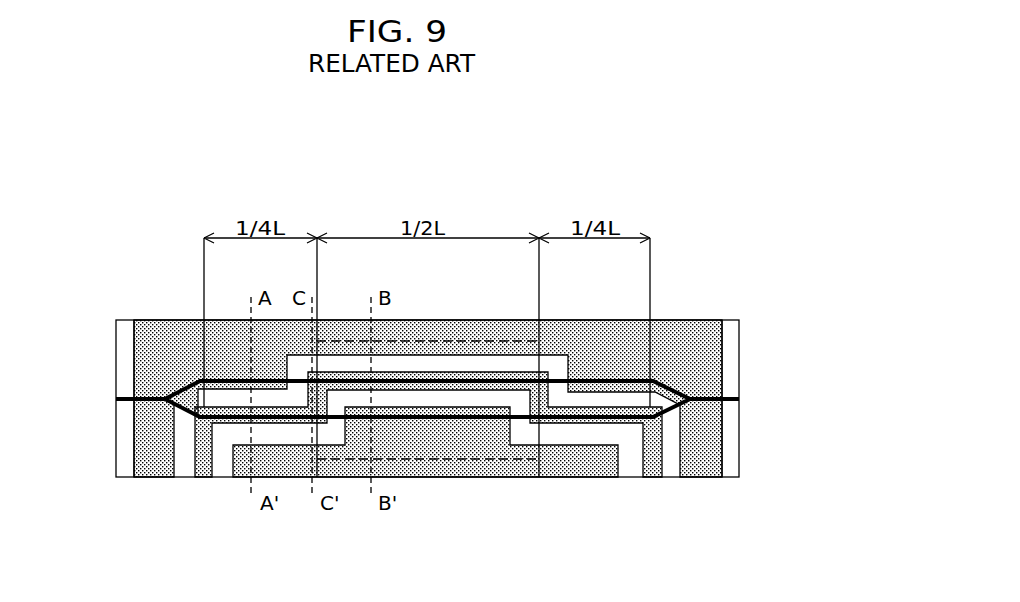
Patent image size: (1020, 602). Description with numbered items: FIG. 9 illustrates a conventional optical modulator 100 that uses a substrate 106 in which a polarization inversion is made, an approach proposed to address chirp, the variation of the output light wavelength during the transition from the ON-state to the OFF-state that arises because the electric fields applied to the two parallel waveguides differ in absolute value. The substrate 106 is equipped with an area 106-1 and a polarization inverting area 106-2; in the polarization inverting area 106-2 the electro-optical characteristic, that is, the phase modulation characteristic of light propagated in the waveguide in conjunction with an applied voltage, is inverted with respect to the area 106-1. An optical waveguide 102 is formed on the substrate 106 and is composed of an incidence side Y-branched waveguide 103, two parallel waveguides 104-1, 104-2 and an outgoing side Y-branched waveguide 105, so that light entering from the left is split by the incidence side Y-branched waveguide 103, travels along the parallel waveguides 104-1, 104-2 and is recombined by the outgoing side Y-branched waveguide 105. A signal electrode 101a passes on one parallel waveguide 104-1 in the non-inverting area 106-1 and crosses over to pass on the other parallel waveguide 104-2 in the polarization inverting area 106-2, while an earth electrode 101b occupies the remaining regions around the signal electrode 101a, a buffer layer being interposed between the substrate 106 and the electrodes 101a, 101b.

The optical modulator 100 is at (681, 294).
The signal electrode 101a is at (205, 464).
The earth electrode 101b is at (418, 462).
The optical waveguide 102 is at (127, 402).
The incidence side Y-branched waveguide 103 is at (190, 368).
The parallel waveguide 104-1 is at (453, 373).
The parallel waveguide 104-2 is at (292, 420).
The outgoing side Y-branched waveguide 105 is at (670, 381).
The substrate 106 is at (740, 327).
The area 106-1 is at (722, 448).
The polarization inverting area 106-2 is at (530, 462).